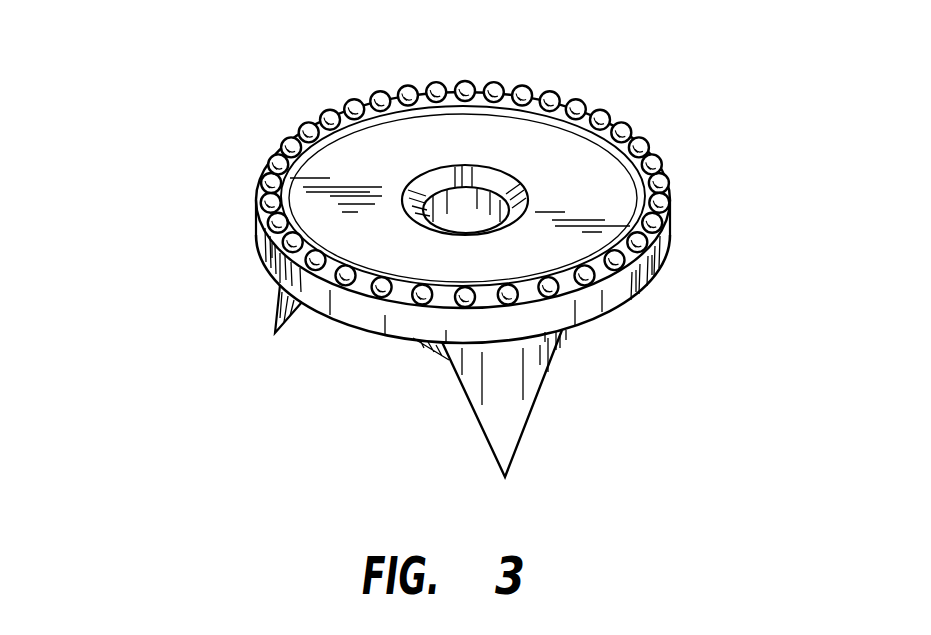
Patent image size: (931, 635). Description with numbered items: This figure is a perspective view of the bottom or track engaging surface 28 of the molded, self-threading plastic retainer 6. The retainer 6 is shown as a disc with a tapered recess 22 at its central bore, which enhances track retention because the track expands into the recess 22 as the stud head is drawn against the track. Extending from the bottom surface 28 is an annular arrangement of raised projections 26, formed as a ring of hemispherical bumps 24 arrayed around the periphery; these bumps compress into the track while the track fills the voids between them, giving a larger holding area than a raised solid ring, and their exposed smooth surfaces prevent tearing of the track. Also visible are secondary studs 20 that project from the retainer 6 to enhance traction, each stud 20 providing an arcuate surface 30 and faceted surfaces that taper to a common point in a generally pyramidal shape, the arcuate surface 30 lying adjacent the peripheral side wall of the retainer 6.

The retainer 6 is at (240, 241).
The secondary stud 20 is at (472, 410).
The tapered recess 22 is at (502, 180).
The hemispherical bumps 24 is at (686, 150).
The raised projections 26 is at (265, 182).
The bottom surface 28 is at (389, 145).
The arcuate surface 30 is at (514, 417).